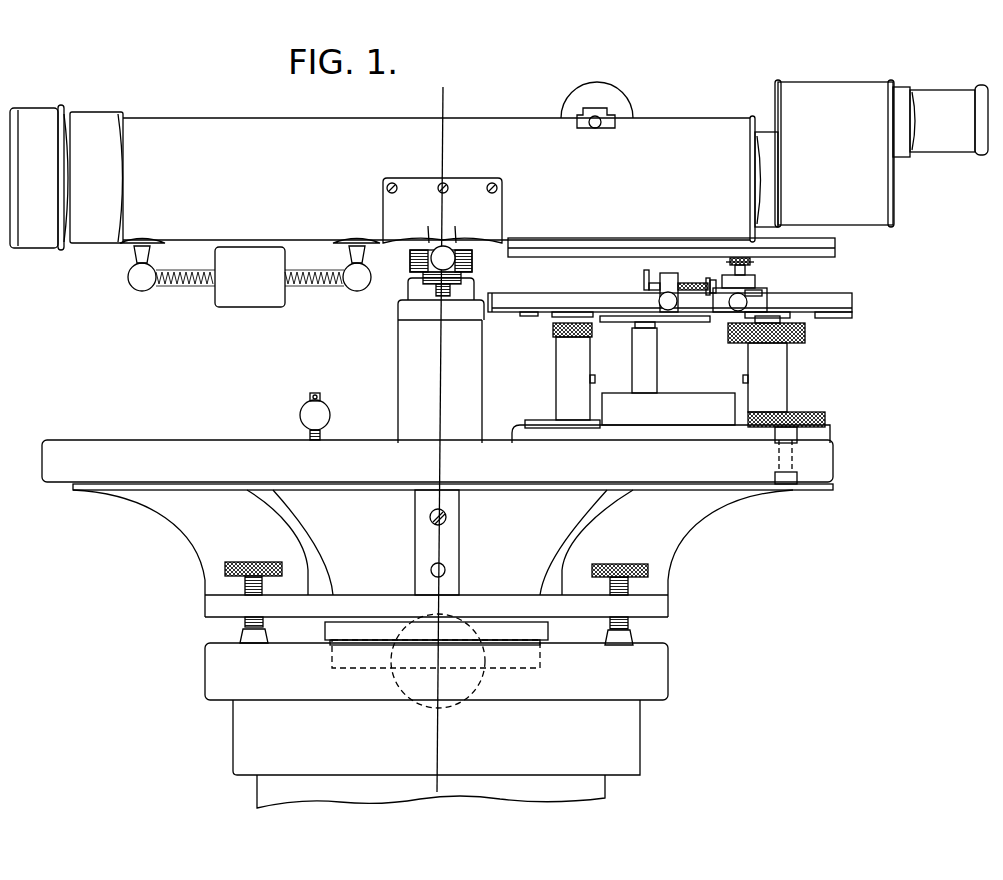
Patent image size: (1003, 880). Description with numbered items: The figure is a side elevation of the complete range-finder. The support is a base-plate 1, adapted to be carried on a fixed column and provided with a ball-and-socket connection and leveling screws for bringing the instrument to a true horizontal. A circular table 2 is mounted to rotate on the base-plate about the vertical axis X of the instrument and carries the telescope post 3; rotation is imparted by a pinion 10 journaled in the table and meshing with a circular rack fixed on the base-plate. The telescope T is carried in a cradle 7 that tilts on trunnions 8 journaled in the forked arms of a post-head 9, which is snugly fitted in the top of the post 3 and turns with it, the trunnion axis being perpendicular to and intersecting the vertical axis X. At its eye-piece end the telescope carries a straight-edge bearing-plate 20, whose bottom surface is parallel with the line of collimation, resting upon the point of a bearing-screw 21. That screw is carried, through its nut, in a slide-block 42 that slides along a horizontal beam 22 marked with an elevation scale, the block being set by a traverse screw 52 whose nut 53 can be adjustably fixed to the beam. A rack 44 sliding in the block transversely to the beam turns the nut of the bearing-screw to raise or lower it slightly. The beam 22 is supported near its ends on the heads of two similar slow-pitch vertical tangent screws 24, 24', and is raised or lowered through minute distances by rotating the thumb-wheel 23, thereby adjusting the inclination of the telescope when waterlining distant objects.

The telescope T is at (672, 138).
The vertical axis X is at (439, 428).
The base-plate 1 is at (675, 540).
The circular table 2 is at (835, 451).
The telescope post 3 is at (455, 390).
The cradle 7 is at (452, 213).
The trunnions 8 is at (450, 260).
The post-head 9 is at (413, 294).
The pinion 10 is at (786, 478).
The straight-edge bearing-plate 20 is at (835, 246).
The bearing-screw 21 is at (750, 263).
The horizontal beam 22 is at (845, 302).
The thumb-wheel 23 is at (805, 338).
The vertical tangent screw 24 is at (549, 374).
The vertical tangent screw 24' is at (803, 329).
The slide-block 42 is at (722, 304).
The rack 44 is at (758, 291).
The traverse screw 52 is at (700, 283).
The nut 53 is at (672, 290).